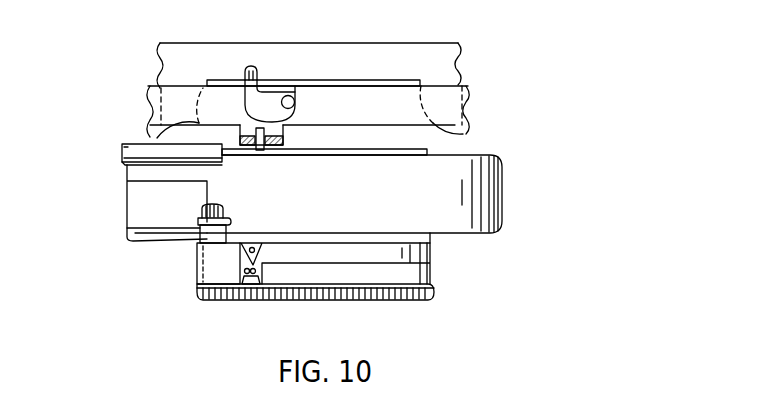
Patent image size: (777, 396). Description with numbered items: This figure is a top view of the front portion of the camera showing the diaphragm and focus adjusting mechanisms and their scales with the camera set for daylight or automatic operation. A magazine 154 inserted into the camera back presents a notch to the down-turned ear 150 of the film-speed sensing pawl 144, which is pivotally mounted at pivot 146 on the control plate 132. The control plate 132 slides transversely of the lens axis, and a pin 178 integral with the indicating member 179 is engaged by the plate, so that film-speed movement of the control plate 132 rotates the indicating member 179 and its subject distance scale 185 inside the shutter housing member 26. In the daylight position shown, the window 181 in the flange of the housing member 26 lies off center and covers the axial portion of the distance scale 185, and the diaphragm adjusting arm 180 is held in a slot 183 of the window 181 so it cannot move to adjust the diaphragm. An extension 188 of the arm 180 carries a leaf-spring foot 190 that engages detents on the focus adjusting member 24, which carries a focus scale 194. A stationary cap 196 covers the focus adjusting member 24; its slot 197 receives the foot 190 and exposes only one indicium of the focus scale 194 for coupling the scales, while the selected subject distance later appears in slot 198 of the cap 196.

The magazine 154 is at (468, 62).
The control plate 132 is at (470, 106).
The pivot 146 is at (290, 80).
The down-turned ear 150 is at (254, 68).
The film-speed sensing pawl 144 is at (245, 103).
The pin 178 is at (282, 136).
The window 181 is at (127, 178).
The subject distance scale 185 is at (372, 192).
The shutter housing member 26 is at (503, 177).
The indicating member 179 is at (185, 207).
The diaphragm adjusting arm 180 is at (198, 221).
The slot 183 is at (230, 222).
The extension 188 is at (200, 245).
The stationary cap 196 is at (205, 273).
The leaf-spring foot 190 is at (263, 253).
The slot 197 is at (388, 258).
The slot 198 is at (263, 281).
The focus scale 194 is at (250, 279).
The focus adjusting member 24 is at (431, 295).